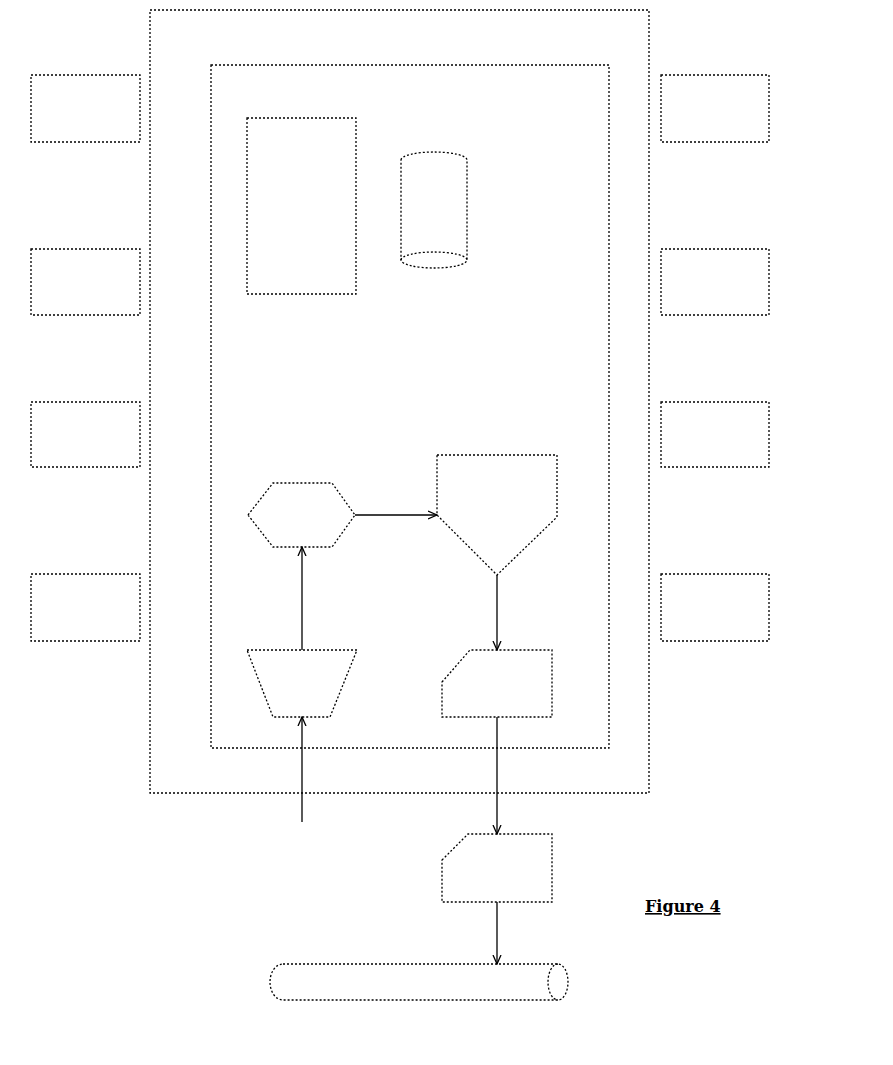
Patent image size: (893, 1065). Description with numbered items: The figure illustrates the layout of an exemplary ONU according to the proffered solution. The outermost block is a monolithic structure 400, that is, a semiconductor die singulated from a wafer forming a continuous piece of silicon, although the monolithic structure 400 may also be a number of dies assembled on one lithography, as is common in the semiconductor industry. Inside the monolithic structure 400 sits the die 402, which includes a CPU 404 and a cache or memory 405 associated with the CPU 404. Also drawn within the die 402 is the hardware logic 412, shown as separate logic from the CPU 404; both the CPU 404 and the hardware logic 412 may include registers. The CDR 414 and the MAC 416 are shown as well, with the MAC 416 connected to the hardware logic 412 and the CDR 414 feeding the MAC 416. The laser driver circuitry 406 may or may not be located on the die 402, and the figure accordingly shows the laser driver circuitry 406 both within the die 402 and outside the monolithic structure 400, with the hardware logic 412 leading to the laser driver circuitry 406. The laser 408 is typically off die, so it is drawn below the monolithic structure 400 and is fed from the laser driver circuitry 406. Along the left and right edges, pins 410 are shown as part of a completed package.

The monolithic structure 400 is at (399, 401).
The die 402 is at (410, 406).
The CPU 404 is at (301, 206).
The cache or memory 405 is at (434, 210).
The laser driver circuitry 406 is at (497, 807).
The laser 408 is at (419, 982).
The pins 410 is at (400, 358).
The hardware logic 412 is at (497, 552).
The CDR 414 is at (302, 684).
The MAC 416 is at (342, 515).